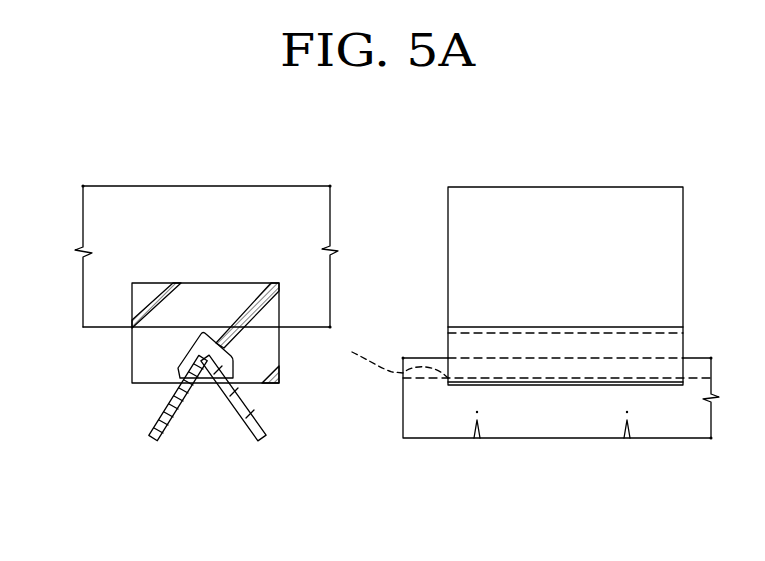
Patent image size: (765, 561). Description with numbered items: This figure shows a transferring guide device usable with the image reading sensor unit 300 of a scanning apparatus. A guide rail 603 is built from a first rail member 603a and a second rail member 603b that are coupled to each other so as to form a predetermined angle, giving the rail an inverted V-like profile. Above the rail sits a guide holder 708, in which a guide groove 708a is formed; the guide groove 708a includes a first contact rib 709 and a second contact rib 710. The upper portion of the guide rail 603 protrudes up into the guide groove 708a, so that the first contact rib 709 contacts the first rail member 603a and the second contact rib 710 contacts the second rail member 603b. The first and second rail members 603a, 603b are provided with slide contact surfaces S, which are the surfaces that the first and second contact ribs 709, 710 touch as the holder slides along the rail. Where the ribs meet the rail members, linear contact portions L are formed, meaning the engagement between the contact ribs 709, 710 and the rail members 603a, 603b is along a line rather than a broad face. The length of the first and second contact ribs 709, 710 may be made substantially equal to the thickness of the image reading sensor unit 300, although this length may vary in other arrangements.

The image reading sensor unit 300 is at (452, 187).
The guide holder 708 is at (444, 331).
The guide groove 708a is at (207, 350).
The first contact rib 709 is at (233, 360).
The second contact rib 710 is at (180, 370).
The guide rail 603 is at (383, 442).
The first rail member 603a is at (403, 428).
The second rail member 603b is at (155, 421).
The linear contact portions L is at (552, 384).
The slide contact surfaces S is at (674, 424).